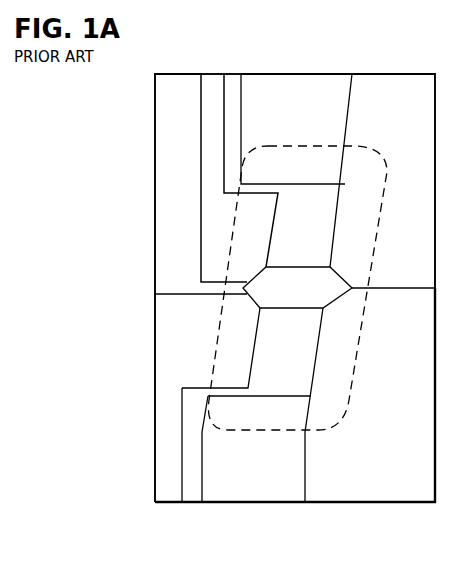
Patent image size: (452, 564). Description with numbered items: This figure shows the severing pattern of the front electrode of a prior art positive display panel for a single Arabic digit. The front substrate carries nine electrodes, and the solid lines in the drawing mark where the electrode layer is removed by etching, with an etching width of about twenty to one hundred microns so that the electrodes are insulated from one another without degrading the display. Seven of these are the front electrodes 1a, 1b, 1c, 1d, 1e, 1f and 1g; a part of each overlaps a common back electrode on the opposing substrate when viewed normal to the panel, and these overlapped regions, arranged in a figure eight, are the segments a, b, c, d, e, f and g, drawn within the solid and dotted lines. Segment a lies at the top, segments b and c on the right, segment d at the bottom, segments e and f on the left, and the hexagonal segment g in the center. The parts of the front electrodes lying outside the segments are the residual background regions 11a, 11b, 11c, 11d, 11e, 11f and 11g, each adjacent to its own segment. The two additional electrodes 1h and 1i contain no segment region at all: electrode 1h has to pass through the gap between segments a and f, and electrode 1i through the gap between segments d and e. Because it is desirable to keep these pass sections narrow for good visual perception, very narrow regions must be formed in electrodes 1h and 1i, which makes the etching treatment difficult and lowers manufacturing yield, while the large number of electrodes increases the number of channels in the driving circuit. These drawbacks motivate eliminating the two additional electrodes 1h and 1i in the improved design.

The front electrode 1a is at (318, 86).
The front electrode 1b is at (400, 87).
The front electrode 1c is at (352, 493).
The front electrode 1d is at (247, 496).
The front electrode 1e is at (163, 363).
The front electrode 1f is at (211, 92).
The front electrode 1g is at (163, 177).
The additional electrode 1h is at (233, 86).
The additional electrode 1i is at (190, 490).
The background region 11a is at (305, 130).
The background region 11b is at (404, 130).
The background region 11c is at (394, 448).
The background region 11d is at (263, 485).
The background region 11e is at (189, 345).
The background region 11f is at (223, 223).
The background region 11g is at (188, 223).
The segment a is at (310, 176).
The segment b is at (360, 240).
The segment c is at (341, 353).
The segment d is at (270, 420).
The segment e is at (237, 353).
The segment f is at (256, 240).
The segment g is at (298, 295).